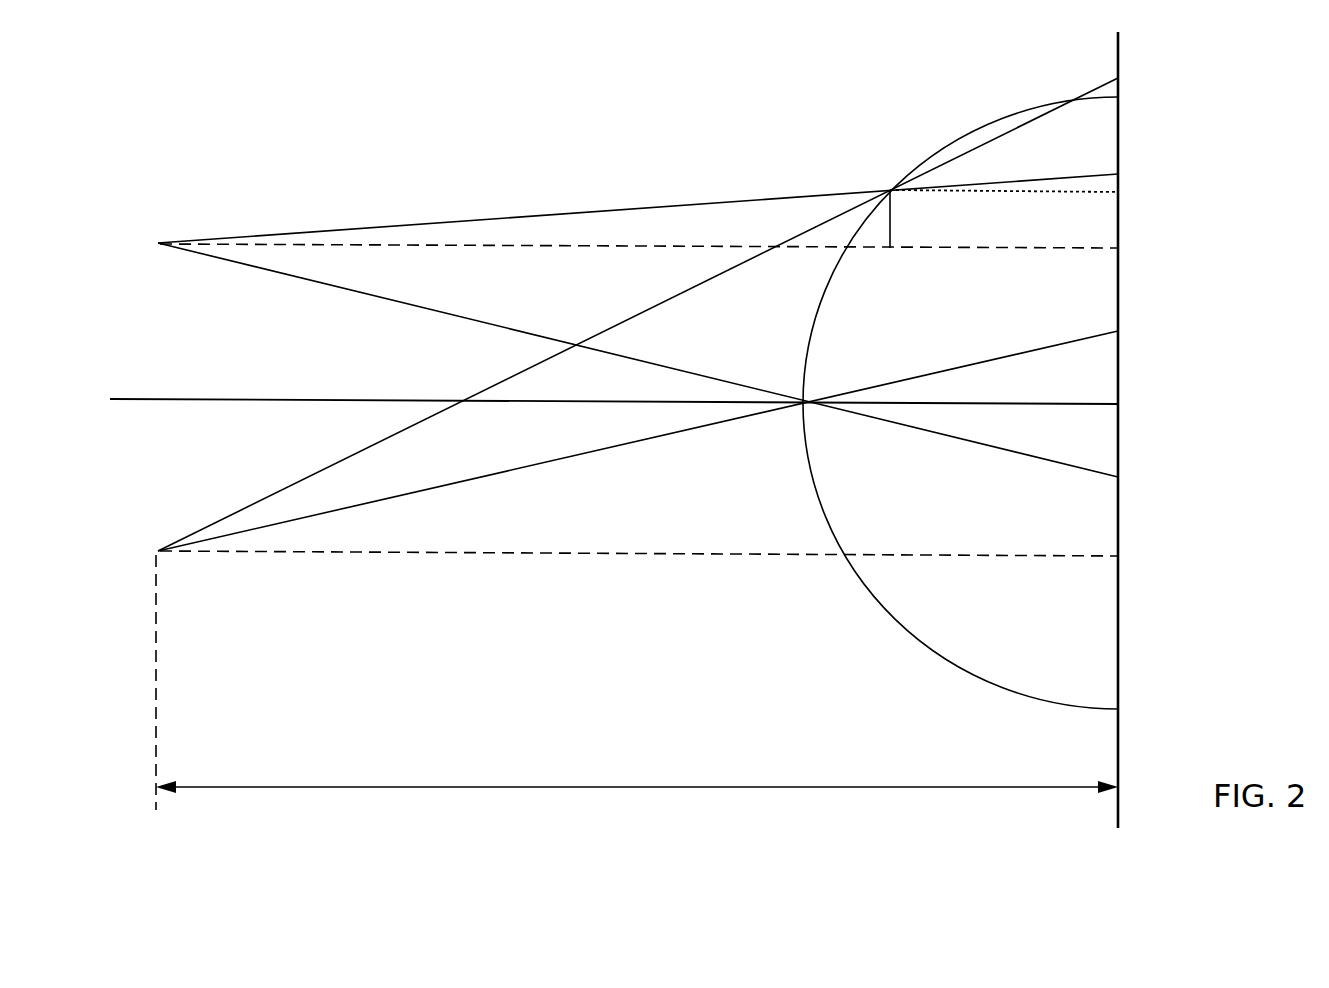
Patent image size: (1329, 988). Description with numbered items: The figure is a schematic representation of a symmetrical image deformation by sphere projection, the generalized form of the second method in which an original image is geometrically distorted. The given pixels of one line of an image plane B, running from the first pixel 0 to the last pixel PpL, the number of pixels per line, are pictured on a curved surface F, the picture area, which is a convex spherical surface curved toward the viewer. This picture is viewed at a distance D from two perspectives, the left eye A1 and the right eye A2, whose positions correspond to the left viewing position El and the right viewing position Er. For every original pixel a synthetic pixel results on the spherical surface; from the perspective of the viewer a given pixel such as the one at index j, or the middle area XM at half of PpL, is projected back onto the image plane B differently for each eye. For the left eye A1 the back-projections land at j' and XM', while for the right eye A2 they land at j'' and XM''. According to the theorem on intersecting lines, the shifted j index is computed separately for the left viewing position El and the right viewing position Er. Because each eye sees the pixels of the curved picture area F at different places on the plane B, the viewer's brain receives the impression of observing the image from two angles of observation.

The left eye perspective A1 is at (614, 325).
The right eye perspective A2 is at (609, 320).
The left viewing position El is at (664, 252).
The right viewing position Er is at (661, 556).
The pixel index j is at (1022, 201).
The projected pixel position for left eye j' is at (1150, 168).
The projected pixel position for right eye j'' is at (1152, 63).
The number of pixels per line PpL is at (986, 399).
The curved surface (picture area) F is at (928, 651).
The image plane B is at (1118, 613).
The middle area XM is at (1185, 404).
The projected middle area for left eye XM' is at (1173, 482).
The projected middle area for right eye XM'' is at (1160, 322).
The first pixel 0 is at (1149, 708).
The viewing distance D is at (637, 682).